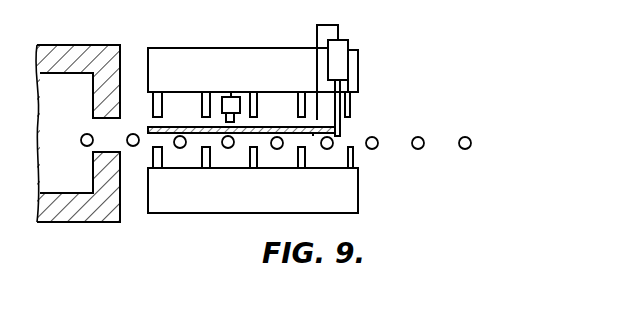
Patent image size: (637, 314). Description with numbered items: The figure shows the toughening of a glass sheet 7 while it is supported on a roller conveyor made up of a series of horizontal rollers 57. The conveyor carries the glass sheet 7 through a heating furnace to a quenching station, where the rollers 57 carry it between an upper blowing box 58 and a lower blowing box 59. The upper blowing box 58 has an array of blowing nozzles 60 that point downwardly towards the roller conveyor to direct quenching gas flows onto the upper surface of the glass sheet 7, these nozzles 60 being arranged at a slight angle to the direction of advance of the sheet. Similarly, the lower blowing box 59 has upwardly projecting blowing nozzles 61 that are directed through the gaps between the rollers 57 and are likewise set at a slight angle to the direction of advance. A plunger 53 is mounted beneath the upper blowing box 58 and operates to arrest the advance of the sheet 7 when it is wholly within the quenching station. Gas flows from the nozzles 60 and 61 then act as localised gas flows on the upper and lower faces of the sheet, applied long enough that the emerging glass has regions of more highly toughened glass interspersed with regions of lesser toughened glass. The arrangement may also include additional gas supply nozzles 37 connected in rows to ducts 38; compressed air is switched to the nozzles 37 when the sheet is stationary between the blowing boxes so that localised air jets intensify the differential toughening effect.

The glass sheet 7 is at (313, 136).
The gas supply nozzles 37 is at (238, 121).
The ducts 38 is at (229, 97).
The plunger 53 is at (340, 127).
The horizontal rollers 57 is at (83, 136).
The upper blowing box 58 is at (355, 69).
The lower blowing box 59 is at (351, 196).
The blowing nozzles 60 is at (353, 108).
The blowing nozzles 61 is at (353, 155).